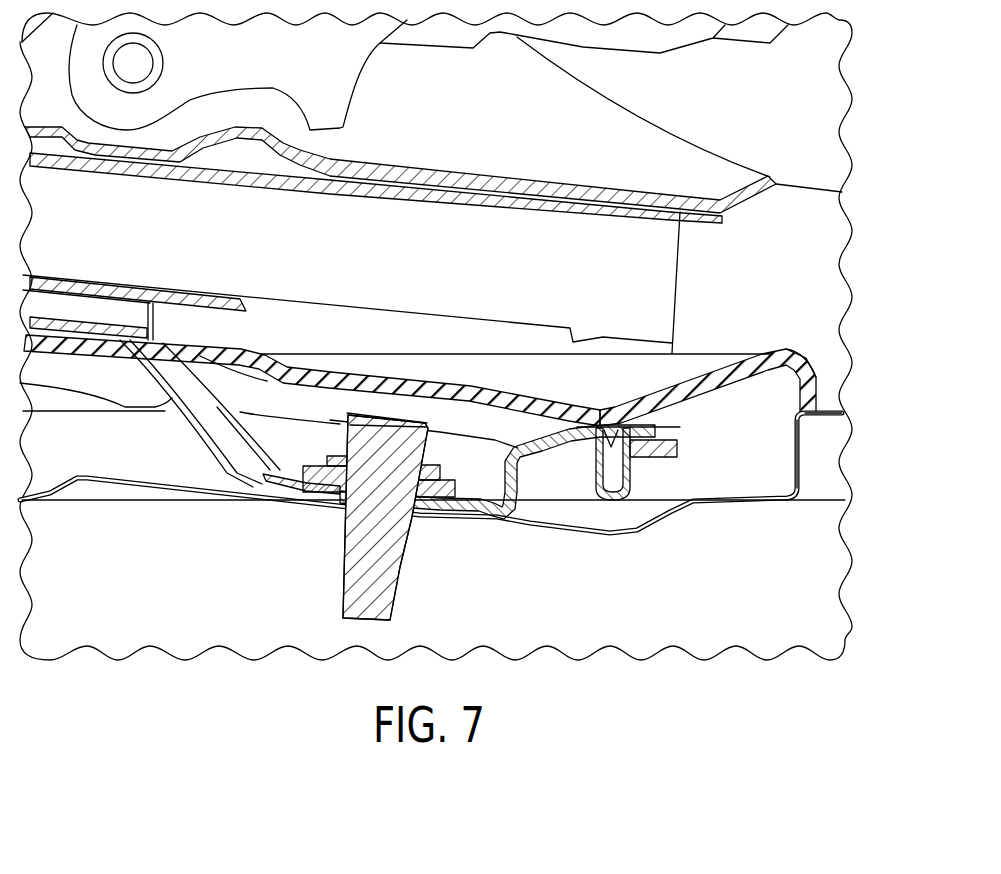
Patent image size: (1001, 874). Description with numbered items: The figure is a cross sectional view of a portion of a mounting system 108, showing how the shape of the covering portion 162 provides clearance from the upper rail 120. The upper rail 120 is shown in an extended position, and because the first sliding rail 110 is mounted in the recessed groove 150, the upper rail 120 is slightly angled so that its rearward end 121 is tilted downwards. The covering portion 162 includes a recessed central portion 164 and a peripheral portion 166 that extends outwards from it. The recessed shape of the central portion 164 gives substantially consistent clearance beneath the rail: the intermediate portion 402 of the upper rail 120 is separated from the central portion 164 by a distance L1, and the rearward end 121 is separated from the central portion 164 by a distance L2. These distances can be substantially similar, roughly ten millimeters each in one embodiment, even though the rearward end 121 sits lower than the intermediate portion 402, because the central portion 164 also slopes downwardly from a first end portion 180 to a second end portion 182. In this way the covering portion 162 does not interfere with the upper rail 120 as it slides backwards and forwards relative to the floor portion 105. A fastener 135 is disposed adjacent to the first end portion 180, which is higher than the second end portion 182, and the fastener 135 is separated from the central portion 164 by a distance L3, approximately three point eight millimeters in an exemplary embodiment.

The floor portion 105 is at (643, 533).
The mounting system 108 is at (850, 388).
The first sliding rail 110 is at (813, 447).
The upper rail 120 is at (310, 288).
The rearward end 121 is at (680, 265).
The fastener 135 is at (352, 558).
The recessed groove 150 is at (780, 475).
The covering portion 162 is at (745, 355).
The central portion 164 is at (463, 400).
The peripheral portion 166 is at (787, 351).
The first end portion 180 is at (235, 350).
The second end portion 182 is at (727, 380).
The intermediate portion 402 is at (446, 318).
The distance L1 is at (452, 323).
The distance L2 is at (693, 383).
The distance L3 is at (403, 412).